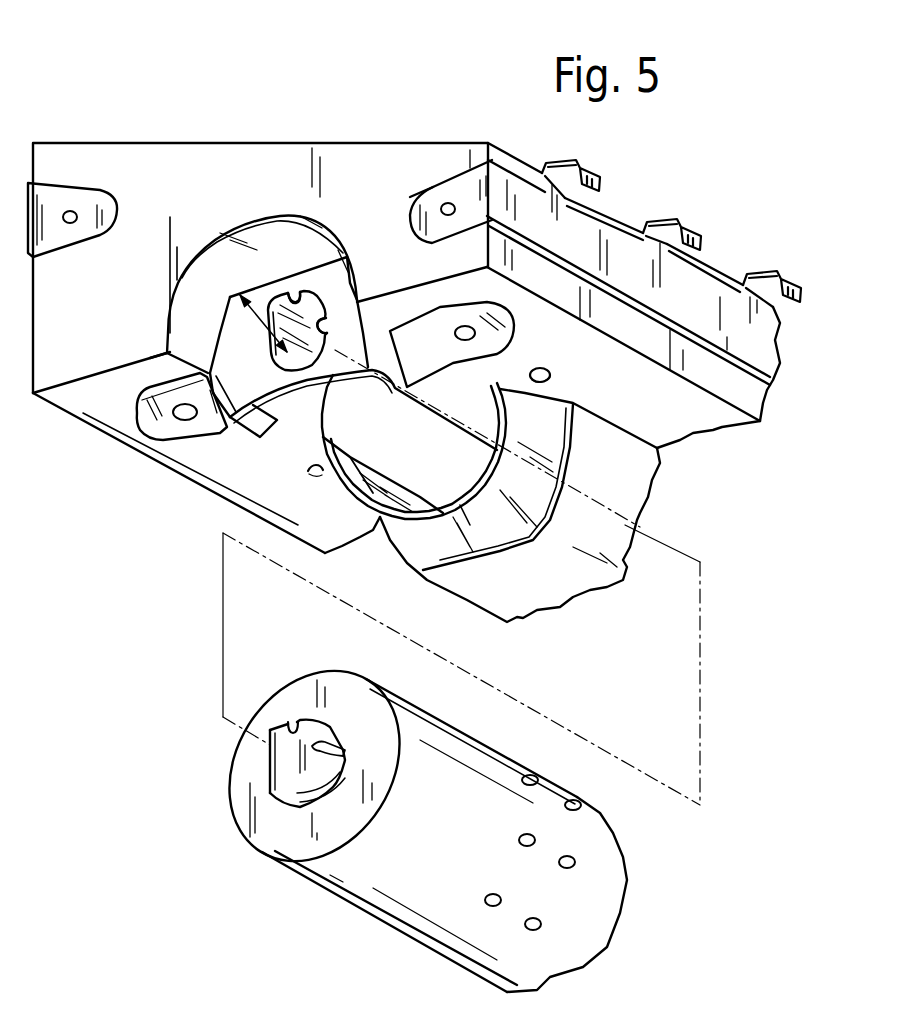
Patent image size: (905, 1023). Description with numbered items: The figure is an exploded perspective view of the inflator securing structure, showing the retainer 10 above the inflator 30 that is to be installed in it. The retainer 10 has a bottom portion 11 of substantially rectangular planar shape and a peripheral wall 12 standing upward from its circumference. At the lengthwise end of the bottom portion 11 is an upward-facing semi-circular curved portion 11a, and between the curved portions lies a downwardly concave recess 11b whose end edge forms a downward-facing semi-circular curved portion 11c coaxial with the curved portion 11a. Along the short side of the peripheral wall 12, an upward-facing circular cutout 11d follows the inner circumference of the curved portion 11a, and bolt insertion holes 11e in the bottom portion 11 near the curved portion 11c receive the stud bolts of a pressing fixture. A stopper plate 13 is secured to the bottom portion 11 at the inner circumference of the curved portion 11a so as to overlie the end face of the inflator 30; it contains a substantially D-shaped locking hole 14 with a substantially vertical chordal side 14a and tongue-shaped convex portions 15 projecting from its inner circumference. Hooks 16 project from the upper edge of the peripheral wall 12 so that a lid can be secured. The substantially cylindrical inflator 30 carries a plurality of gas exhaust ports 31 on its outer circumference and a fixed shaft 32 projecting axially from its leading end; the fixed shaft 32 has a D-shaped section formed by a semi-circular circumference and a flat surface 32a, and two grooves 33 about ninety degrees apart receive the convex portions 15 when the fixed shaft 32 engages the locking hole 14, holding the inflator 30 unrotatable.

The retainer 10 is at (356, 97).
The bottom portion 11 is at (207, 458).
The upward-facing semi-circular curved portion 11a is at (322, 402).
The recess 11b is at (540, 595).
The downward-facing semi-circular curved portion 11c is at (428, 493).
The upward-facing circular cutout 11d is at (200, 253).
The bolt insertion hole 11e is at (550, 377).
The peripheral wall 12 is at (152, 155).
The stopper plate 13 is at (165, 355).
The locking hole 14 is at (280, 356).
The chordal side 14a is at (266, 342).
The convex portion 15 is at (291, 291).
The hook 16 is at (588, 165).
The inflator 30 is at (230, 840).
The gas exhaust port 31 is at (538, 780).
The fixed shaft 32 is at (330, 803).
The flat surface 32a is at (272, 745).
The groove 33 is at (362, 752).